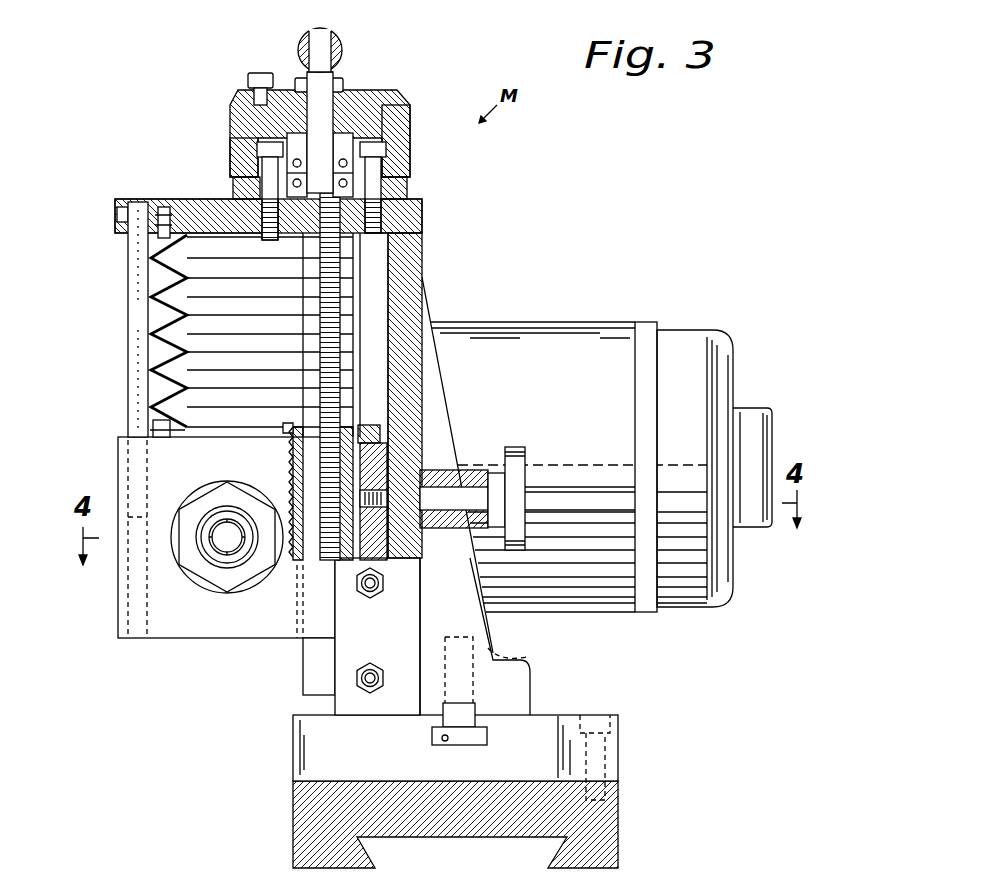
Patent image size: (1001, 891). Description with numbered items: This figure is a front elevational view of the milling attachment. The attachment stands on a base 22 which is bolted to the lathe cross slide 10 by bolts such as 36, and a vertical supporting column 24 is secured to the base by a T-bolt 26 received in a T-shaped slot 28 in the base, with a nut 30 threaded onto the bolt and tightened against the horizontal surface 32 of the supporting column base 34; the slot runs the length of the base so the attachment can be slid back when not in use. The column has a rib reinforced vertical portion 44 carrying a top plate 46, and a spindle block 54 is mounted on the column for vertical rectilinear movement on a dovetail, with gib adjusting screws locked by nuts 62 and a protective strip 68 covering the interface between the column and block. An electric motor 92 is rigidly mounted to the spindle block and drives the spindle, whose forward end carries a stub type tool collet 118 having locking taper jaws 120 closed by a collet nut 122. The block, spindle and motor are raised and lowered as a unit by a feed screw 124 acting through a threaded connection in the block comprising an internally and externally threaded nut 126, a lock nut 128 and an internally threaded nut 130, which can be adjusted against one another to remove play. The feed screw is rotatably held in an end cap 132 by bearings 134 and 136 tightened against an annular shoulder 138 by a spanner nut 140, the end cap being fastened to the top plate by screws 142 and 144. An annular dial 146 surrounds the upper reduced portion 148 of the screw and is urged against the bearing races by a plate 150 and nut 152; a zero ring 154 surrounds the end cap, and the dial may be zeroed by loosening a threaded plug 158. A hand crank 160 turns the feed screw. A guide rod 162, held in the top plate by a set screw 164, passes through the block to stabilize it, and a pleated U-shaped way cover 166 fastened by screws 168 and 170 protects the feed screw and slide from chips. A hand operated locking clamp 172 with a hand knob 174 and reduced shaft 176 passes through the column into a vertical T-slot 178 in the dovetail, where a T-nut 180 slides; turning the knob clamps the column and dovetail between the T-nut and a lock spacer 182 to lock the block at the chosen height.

The cross slide 10 is at (618, 808).
The base 22 is at (565, 715).
The supporting column 24 is at (420, 250).
The T-bolt 26 is at (478, 690).
The T-shaped slot 28 is at (445, 745).
The nut 30 is at (445, 637).
The horizontal surface 32 is at (508, 652).
The supporting column base 34 is at (530, 690).
The bolts 36 is at (612, 742).
The vertical portion 44 is at (425, 370).
The top plate 46 is at (424, 218).
The spindle block 54 is at (209, 640).
The nuts 62 is at (385, 583).
The protective strip 68 is at (371, 671).
The electric motor 92 is at (547, 322).
The tool collet 118 is at (216, 560).
The locking taper jaws 120 is at (238, 557).
The collet nut 122 is at (198, 566).
The feed screw 124 is at (340, 313).
The internally and externally threaded nut 126 is at (390, 480).
The lock nut 128 is at (293, 437).
The internally threaded nut 130 is at (293, 560).
The end cap 132 is at (408, 190).
The bearing 134 is at (196, 216).
The bearing 136 is at (236, 186).
The annular shoulder 138 is at (401, 216).
The spanner nut 140 is at (345, 138).
The screw 142 is at (388, 160).
The screw 144 is at (248, 162).
The annular dial 146 is at (412, 120).
The upper reduced portion 148 is at (300, 138).
The plate 150 is at (386, 102).
The nut 152 is at (300, 85).
The zero ring 154 is at (235, 140).
The threaded plug 158 is at (248, 80).
The hand crank 160 is at (336, 40).
The guide rod 162 is at (134, 330).
The set screw 164 is at (116, 212).
The way cover 166 is at (150, 378).
The screw 168 is at (150, 240).
The screw 170 is at (163, 432).
The locking clamp 172 is at (509, 434).
The hand knob 174 is at (520, 500).
The reduced shaft 176 is at (470, 490).
The T-slot 178 is at (362, 433).
The T-nut 180 is at (418, 430).
The lock spacer 182 is at (486, 530).